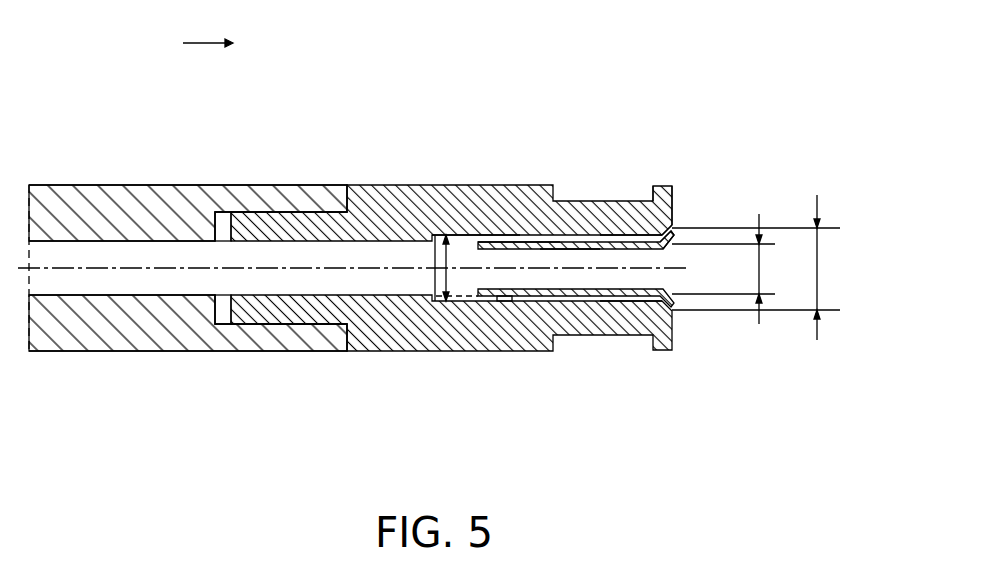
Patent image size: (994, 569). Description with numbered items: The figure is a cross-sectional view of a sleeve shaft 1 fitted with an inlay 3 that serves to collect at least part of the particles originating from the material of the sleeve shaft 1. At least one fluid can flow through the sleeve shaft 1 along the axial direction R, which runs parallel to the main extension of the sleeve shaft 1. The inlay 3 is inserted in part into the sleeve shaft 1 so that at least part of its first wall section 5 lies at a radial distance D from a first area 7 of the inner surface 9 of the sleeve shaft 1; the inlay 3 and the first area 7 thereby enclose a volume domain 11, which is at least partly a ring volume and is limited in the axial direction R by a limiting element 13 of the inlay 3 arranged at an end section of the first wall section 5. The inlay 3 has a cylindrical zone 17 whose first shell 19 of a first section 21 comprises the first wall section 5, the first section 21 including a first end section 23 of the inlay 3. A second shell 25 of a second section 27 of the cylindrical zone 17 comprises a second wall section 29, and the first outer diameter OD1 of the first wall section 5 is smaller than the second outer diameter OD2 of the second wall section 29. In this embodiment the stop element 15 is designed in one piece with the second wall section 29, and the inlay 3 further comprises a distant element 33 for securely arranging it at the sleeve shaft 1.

The sleeve shaft 1 is at (118, 128).
The axial direction R is at (208, 28).
The inlay 3 is at (728, 360).
The inner surface 9 is at (430, 272).
The first wall section 5 is at (537, 298).
The cylindrical zone 17 is at (600, 262).
The first area 7 is at (626, 302).
The volume domain 11 is at (485, 306).
The distant element 33 is at (506, 302).
The first end section 23 is at (463, 230).
The first shell 19 is at (500, 234).
The first section 21 is at (548, 243).
The limiting element 13 is at (638, 234).
The second wall section 29 is at (655, 196).
The second section 27 is at (659, 232).
The second shell 25 is at (676, 222).
The stop element 15 is at (688, 214).
The radial distance D is at (461, 268).
The first outer diameter OD1 is at (737, 269).
The second outer diameter OD2 is at (767, 267).